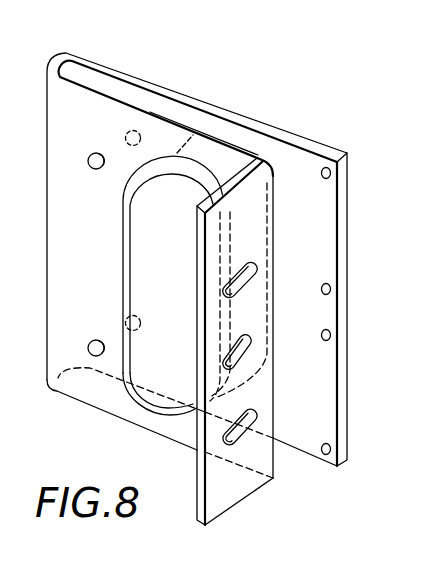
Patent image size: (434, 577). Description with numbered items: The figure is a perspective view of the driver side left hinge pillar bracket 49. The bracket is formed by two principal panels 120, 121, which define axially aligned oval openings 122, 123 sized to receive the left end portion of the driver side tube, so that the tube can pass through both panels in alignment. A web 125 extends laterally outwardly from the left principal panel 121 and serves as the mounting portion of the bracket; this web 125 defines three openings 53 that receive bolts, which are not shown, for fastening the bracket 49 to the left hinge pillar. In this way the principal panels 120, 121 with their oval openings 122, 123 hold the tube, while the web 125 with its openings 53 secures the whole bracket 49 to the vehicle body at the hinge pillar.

The left hinge pillar bracket 49 is at (293, 80).
The principal panel 120 is at (314, 140).
The left principal panel 121 is at (107, 98).
The oval opening 122 is at (225, 130).
The oval opening 123 is at (150, 281).
The web 125 is at (243, 488).
The openings 53 is at (250, 410).